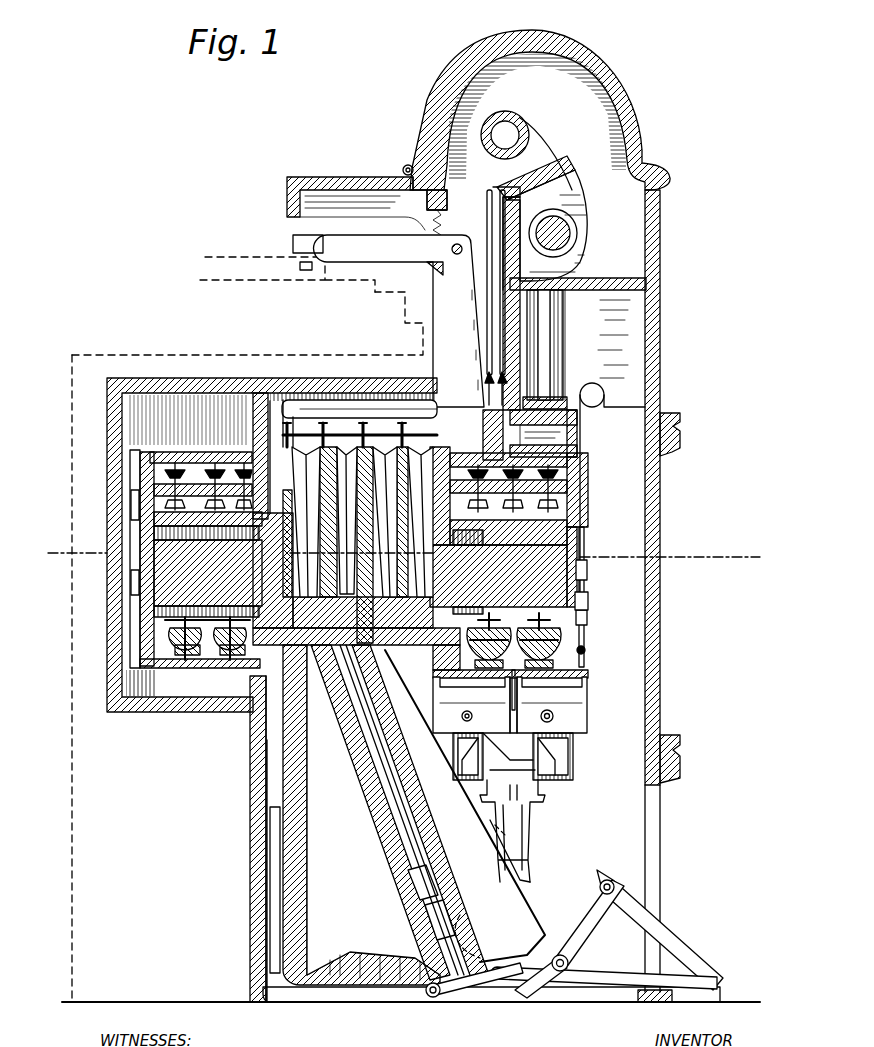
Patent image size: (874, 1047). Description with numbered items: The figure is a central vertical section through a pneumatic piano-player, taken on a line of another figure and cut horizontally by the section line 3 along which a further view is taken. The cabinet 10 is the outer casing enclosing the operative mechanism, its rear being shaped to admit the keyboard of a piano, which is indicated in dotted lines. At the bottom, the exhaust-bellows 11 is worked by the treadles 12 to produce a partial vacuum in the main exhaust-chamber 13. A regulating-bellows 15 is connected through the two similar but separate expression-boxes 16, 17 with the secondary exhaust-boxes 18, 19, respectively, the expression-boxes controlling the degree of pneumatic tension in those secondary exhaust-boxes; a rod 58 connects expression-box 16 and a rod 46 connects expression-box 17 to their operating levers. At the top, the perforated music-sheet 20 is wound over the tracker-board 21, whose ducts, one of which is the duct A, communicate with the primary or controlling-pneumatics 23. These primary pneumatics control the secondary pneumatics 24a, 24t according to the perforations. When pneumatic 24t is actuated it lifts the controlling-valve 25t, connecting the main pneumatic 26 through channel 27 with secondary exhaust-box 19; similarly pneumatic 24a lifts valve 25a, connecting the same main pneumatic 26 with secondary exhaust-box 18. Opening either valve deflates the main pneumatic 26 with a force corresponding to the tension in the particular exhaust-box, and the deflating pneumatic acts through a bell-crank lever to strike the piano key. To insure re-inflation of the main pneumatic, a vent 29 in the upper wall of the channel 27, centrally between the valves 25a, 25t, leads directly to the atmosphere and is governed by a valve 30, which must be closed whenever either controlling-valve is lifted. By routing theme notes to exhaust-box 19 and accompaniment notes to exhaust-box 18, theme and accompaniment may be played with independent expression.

The cabinet 10 is at (622, 86).
The perforated music-sheet 20 is at (553, 143).
The tracker-board 21 is at (563, 176).
The duct A is at (541, 278).
The primary or controlling-pneumatics 23 is at (190, 470).
The main pneumatic 26 is at (356, 531).
The section line 3 is at (400, 558).
The vent 29 is at (595, 592).
The valve 30 is at (585, 607).
The controlling-valve 25t is at (570, 634).
The secondary pneumatic 24t is at (580, 652).
The secondary exhaust-box 19 is at (126, 650).
The secondary exhaust-box 18 is at (210, 658).
The channel 27 is at (262, 660).
The expression-box 16 is at (471, 705).
The expression-box 17 is at (552, 705).
The rod 58 is at (475, 714).
The rod 46 is at (553, 716).
The controlling-valve 25a is at (420, 655).
The secondary pneumatic 24a is at (395, 668).
The main exhaust-chamber 13 is at (470, 646).
The regulating-bellows 15 is at (465, 806).
The exhaust-bellows 11 is at (491, 823).
The treadles 12 is at (655, 935).